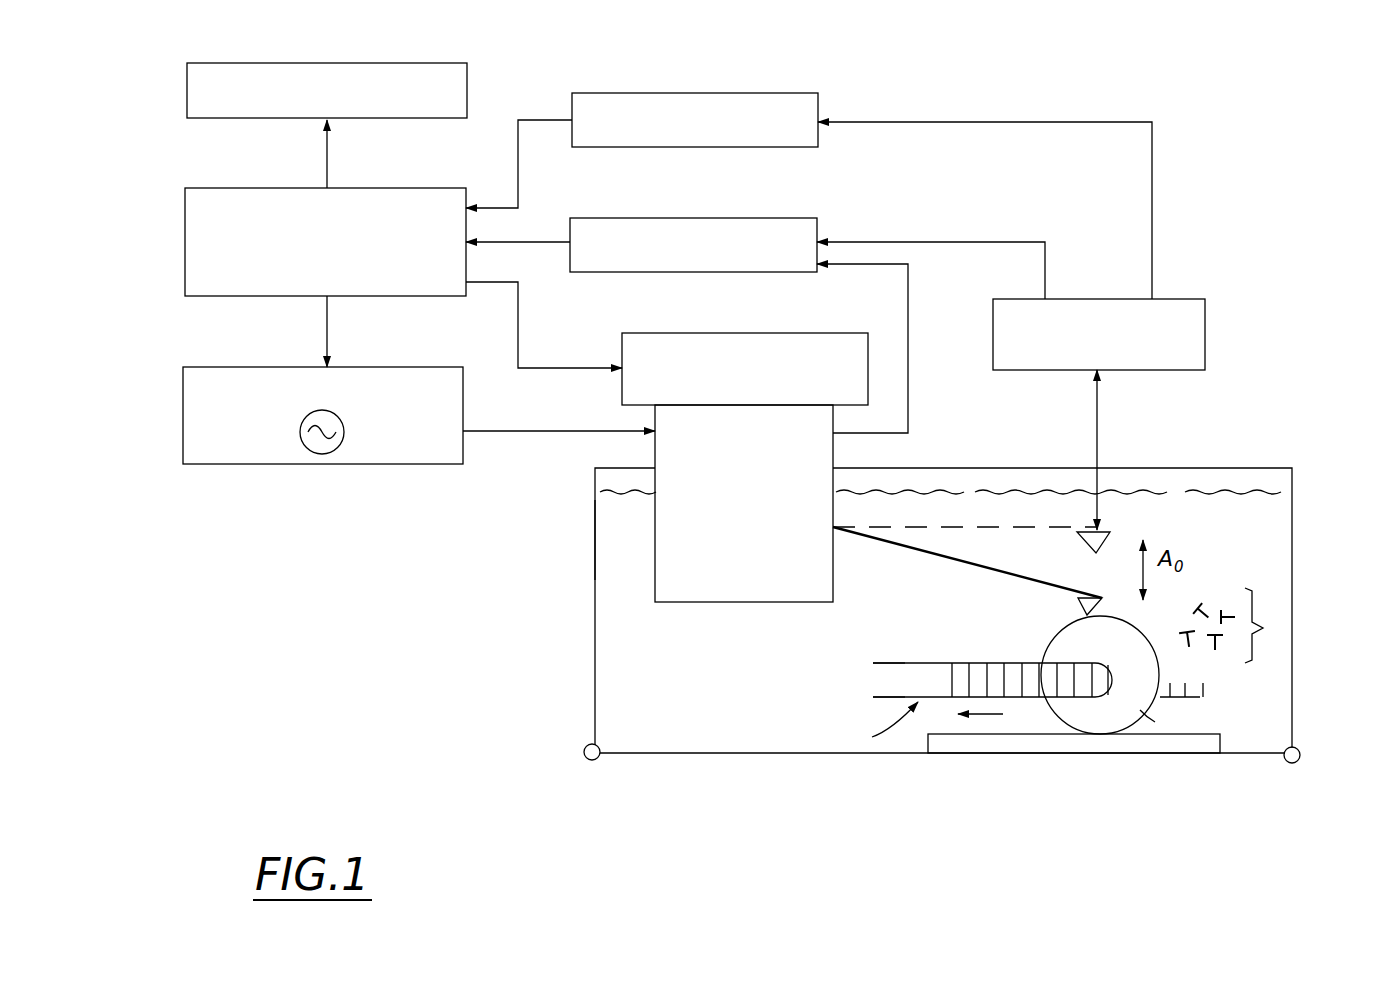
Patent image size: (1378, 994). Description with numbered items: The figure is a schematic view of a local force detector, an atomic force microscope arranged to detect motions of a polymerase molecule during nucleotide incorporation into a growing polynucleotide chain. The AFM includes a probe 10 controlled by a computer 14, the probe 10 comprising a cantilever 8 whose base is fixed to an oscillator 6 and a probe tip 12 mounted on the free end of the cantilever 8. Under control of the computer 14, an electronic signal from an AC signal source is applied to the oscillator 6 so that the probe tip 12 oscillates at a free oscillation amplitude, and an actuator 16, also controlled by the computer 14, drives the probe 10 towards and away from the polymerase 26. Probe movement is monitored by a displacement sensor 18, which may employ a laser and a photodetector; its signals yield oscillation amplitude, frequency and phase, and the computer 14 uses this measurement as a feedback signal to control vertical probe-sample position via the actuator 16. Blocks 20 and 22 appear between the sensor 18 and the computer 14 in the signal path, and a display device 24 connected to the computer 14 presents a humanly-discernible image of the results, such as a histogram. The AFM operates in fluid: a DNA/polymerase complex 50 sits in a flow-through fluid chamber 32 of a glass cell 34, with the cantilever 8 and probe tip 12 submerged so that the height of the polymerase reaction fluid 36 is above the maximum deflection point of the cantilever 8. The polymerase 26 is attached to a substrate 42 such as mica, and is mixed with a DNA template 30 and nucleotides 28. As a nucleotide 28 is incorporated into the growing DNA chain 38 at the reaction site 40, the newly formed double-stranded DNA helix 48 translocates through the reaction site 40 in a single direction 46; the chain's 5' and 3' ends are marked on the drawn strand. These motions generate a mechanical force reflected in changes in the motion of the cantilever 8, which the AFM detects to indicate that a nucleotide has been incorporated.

The oscillator 6 is at (838, 456).
The cantilever 8 is at (978, 566).
The probe 10 is at (1068, 604).
The probe tip 12 is at (427, 367).
The computer 14 is at (423, 188).
The actuator 16 is at (802, 333).
The displacement sensor 18 is at (1205, 330).
The phase detector 20 is at (757, 218).
The RMS detector 22 is at (763, 93).
The display device 24 is at (430, 63).
The polymerase 26 is at (1052, 652).
The nucleotides 28 is at (1263, 628).
The DNA template 30 is at (1200, 697).
The flow-through fluid chamber 32 is at (615, 538).
The glass cell 34 is at (595, 624).
The polymerase reaction fluid 36 is at (625, 490).
The growing polynucleotide chain 38 is at (955, 663).
The reaction site 40 is at (1100, 700).
The substrate 42 is at (970, 748).
The direction of DNA translocation 46 is at (997, 716).
The double-stranded DNA helix 48 is at (875, 727).
The DNA/polymerase complex 50 is at (1148, 722).
The 5' end of DNA strand 5' is at (873, 666).
The 3' end of DNA strand 3' is at (872, 696).